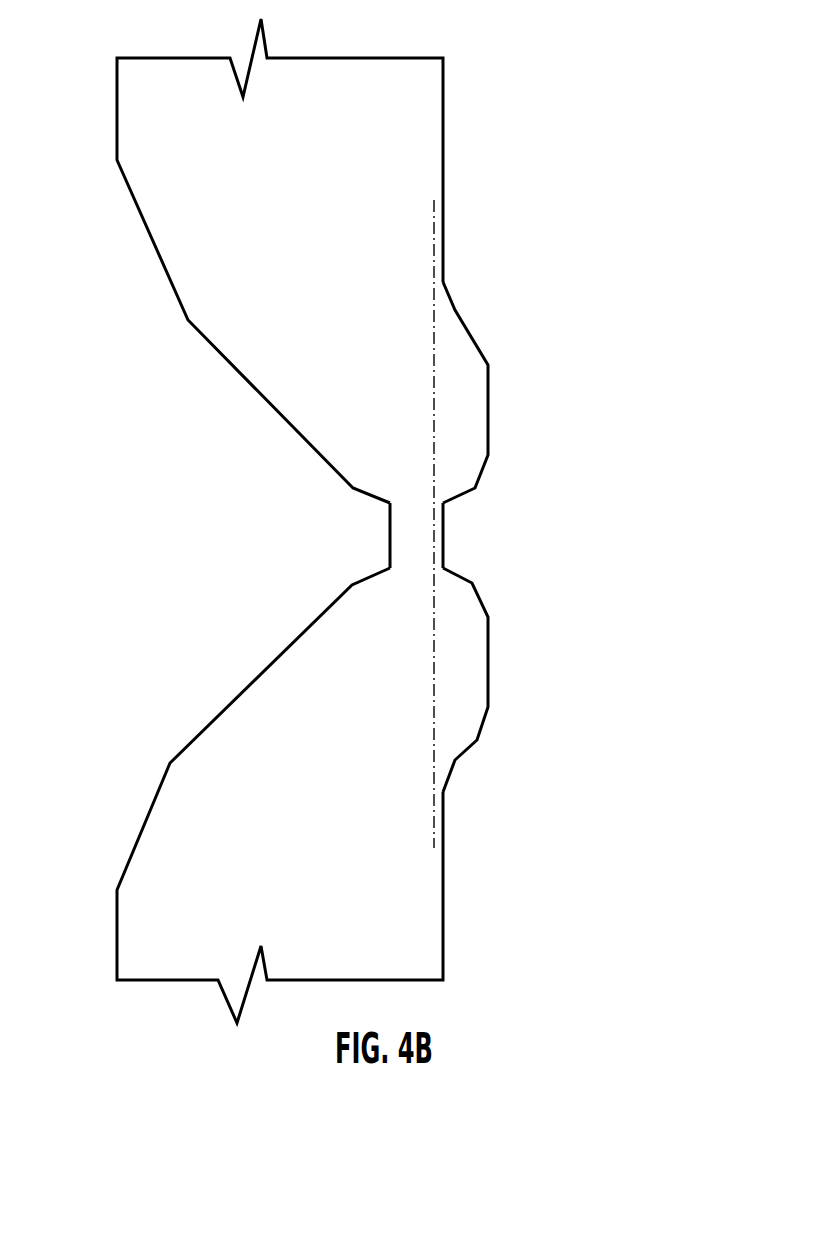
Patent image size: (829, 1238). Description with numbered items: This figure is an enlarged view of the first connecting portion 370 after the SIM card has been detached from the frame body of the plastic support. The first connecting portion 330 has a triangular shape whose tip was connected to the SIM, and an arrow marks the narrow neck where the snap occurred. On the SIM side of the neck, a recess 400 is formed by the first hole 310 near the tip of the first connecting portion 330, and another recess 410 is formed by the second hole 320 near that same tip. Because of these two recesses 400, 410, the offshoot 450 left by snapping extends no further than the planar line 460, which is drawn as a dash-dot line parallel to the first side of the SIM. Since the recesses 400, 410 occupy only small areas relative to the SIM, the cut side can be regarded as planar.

The first hole 310 is at (353, 245).
The second hole 320 is at (353, 897).
The first connecting portion 330 is at (283, 534).
The first connecting portion 370 is at (702, 964).
The recess 400 is at (470, 438).
The recess 410 is at (478, 660).
The offshoot 450 is at (467, 535).
The planar line 460 is at (434, 342).